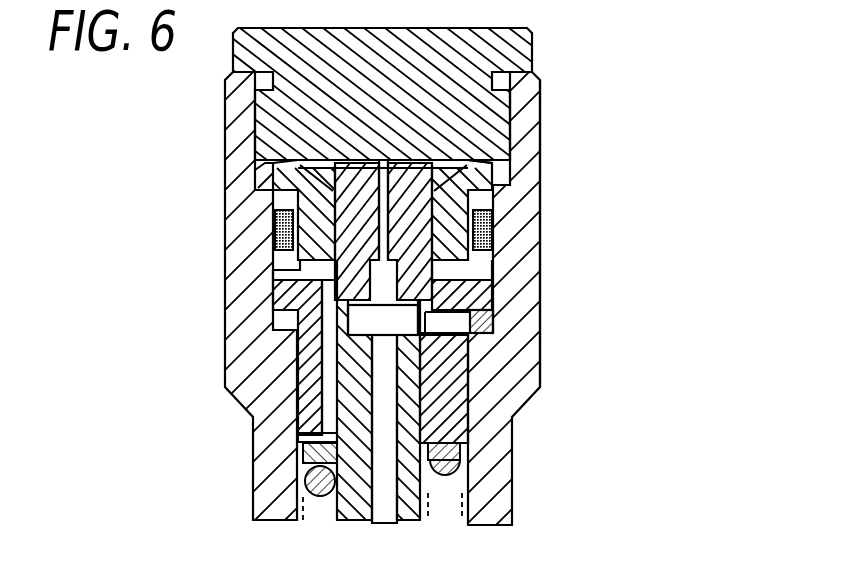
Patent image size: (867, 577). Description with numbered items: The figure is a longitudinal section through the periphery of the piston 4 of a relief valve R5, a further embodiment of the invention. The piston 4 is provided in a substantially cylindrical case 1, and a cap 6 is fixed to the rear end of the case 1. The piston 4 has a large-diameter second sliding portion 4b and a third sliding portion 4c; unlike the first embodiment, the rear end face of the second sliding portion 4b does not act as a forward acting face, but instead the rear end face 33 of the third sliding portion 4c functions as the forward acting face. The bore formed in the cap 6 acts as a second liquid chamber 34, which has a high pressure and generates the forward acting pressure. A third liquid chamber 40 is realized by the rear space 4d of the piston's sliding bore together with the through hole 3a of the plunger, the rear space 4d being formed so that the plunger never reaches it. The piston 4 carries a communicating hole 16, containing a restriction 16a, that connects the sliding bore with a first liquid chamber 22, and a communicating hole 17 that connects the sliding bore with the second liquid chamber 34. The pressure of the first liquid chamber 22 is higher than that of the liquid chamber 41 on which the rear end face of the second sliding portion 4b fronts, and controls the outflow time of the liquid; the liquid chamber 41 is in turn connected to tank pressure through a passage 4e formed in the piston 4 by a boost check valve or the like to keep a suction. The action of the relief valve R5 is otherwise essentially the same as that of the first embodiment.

The case 1 is at (527, 100).
The cap 6 is at (505, 57).
The piston 4 is at (355, 171).
The second sliding portion 4b is at (287, 293).
The third sliding portion 4c is at (313, 202).
The rear space of the sliding bore 4d is at (368, 320).
The passage 4e is at (330, 410).
The through hole 3a is at (383, 376).
The third liquid chamber 40 is at (122, 318).
The communicating hole 16 is at (425, 345).
The restriction 16a is at (430, 320).
The communicating hole 17 is at (383, 190).
The first liquid chamber 22 is at (493, 318).
The rear end face (forward acting face) 33 is at (398, 182).
The second liquid chamber 34 is at (432, 158).
The liquid chamber 41 is at (482, 263).
The relief valve R5 is at (628, 98).